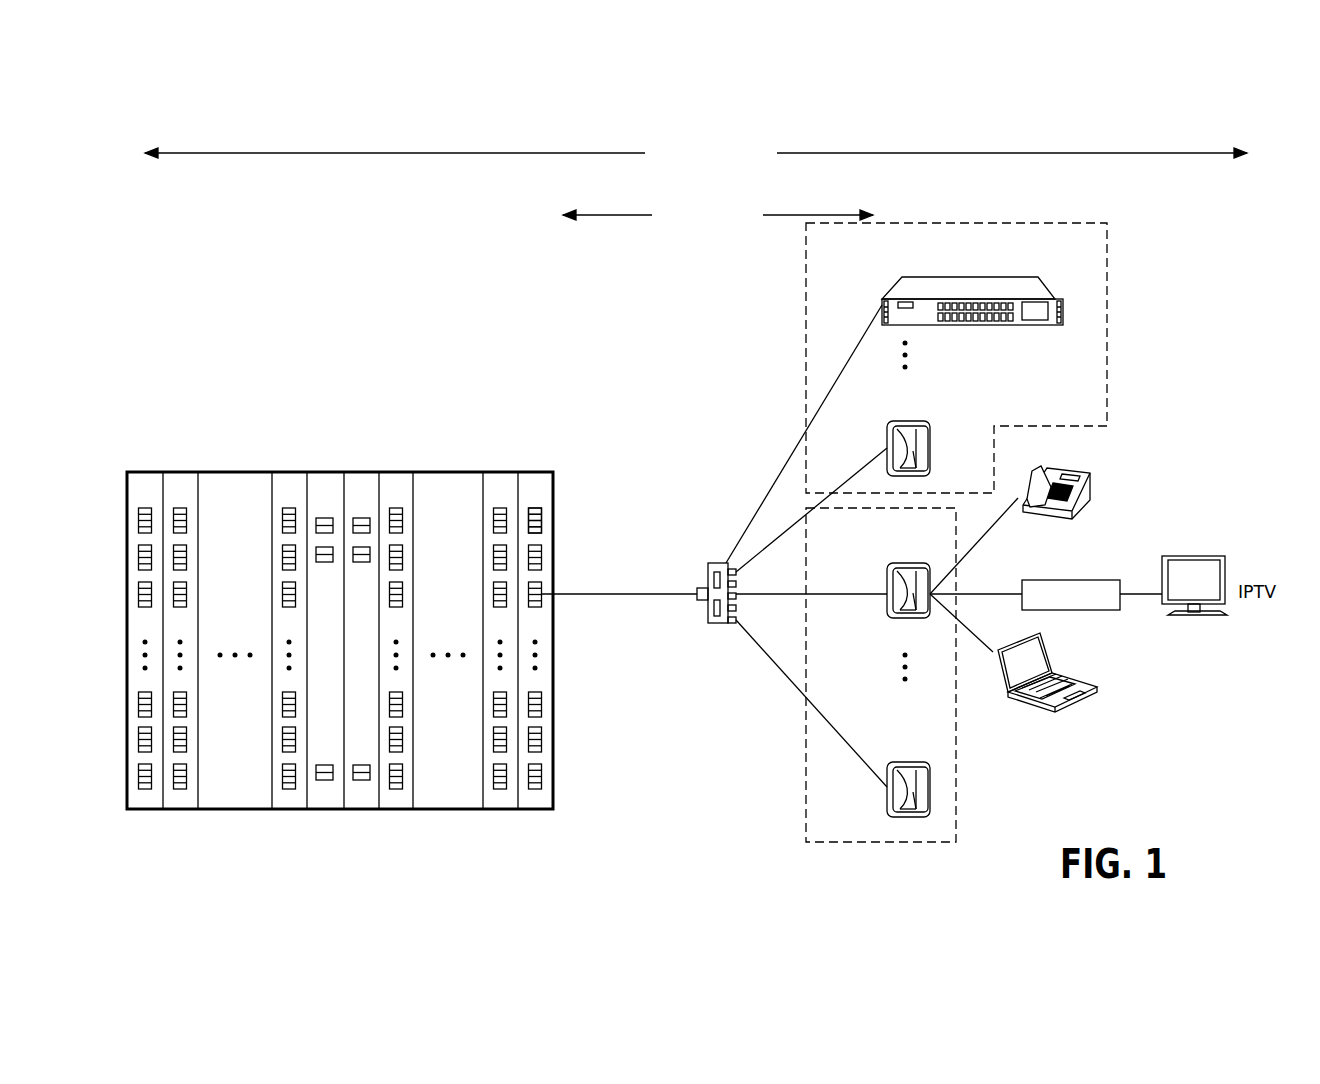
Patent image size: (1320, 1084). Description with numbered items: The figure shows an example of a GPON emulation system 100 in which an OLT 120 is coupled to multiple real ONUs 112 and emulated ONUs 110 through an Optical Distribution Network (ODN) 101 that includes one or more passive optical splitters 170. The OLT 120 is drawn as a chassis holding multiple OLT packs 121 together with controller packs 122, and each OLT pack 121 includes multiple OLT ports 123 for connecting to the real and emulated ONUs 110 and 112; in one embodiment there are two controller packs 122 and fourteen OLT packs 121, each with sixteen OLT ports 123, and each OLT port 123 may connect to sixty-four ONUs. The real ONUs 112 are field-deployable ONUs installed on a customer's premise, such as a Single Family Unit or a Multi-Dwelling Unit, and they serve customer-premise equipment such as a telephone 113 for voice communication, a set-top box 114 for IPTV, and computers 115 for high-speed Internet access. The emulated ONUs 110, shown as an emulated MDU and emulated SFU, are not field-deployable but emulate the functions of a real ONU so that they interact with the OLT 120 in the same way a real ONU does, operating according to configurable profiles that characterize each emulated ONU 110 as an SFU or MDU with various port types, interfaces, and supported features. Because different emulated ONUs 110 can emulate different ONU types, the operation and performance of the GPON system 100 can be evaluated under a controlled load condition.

The GPON emulation system 100 is at (696, 153).
The Optical Distribution Network (ODN) 101 is at (718, 214).
The emulated ONUs 110 is at (1107, 307).
The real ONUs 112 is at (957, 813).
The telephone 113 is at (1131, 496).
The set-top box 114 is at (1112, 606).
The computers 115 is at (1114, 672).
The OLT 120 is at (360, 663).
The OLT packs 121 is at (145, 800).
The controller packs 122 is at (367, 800).
The OLT ports 123 is at (542, 521).
The passive optical splitters 170 is at (708, 618).